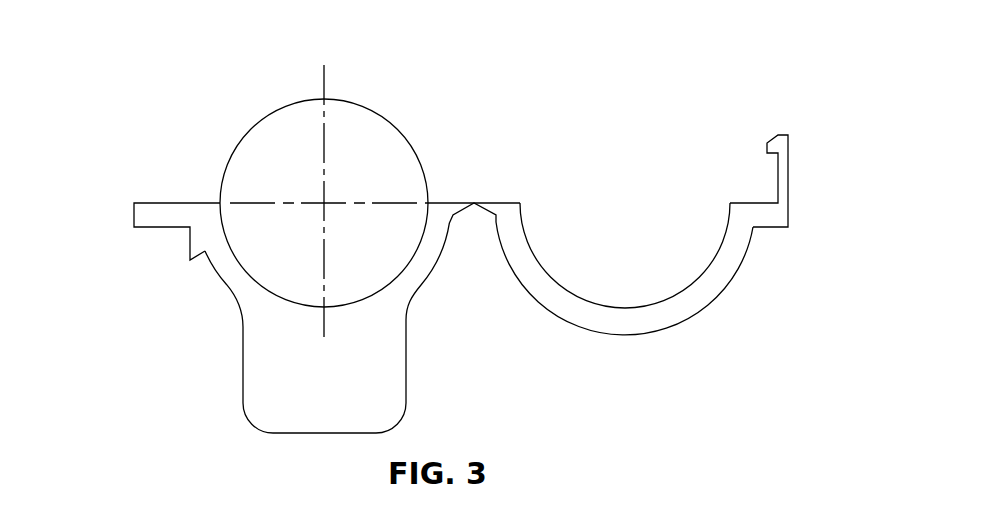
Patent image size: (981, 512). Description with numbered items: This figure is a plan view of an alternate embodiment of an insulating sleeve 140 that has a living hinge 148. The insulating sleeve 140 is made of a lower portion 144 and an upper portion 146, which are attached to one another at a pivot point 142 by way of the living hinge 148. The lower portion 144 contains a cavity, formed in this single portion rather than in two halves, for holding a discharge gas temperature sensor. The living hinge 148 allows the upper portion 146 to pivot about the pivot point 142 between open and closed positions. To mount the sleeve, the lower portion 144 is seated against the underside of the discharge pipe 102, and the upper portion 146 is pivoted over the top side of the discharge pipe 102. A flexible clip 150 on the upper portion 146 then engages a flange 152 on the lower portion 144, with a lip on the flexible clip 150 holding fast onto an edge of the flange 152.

The discharge pipe 102 is at (353, 100).
The insulating sleeve 140 is at (243, 382).
The pivot point 142 is at (474, 203).
The lower portion 144 is at (406, 382).
The upper portion 146 is at (720, 292).
The living hinge 148 is at (476, 182).
The flexible clip 150 is at (789, 160).
The flange 152 is at (148, 227).